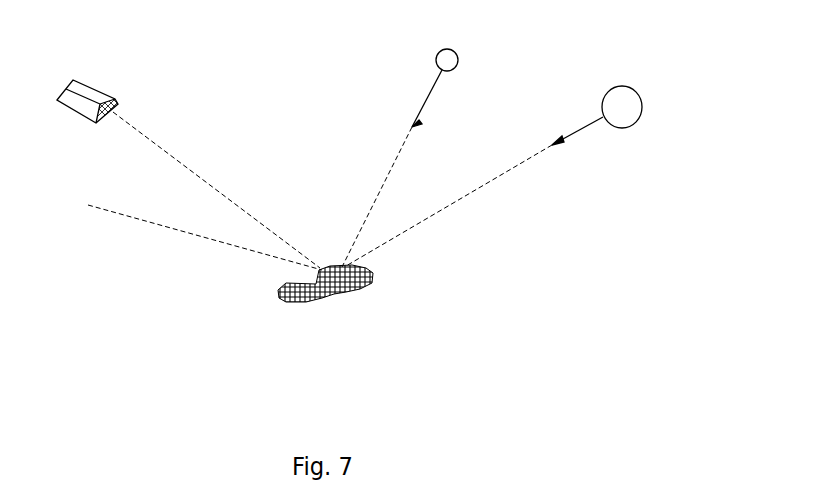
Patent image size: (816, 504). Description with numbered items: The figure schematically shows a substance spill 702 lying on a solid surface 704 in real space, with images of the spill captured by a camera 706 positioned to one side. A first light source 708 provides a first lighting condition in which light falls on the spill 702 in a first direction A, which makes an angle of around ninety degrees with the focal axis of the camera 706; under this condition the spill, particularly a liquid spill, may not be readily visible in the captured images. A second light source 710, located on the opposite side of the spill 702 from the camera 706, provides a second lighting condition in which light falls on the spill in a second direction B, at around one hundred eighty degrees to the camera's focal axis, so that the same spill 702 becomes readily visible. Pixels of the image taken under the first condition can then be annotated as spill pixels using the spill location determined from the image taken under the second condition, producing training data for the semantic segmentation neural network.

The substance spill 702 is at (358, 295).
The solid surface 704 is at (408, 282).
The camera 706 is at (95, 89).
The first light source 708 is at (457, 53).
The second light source 710 is at (641, 100).
The first direction A is at (432, 98).
The second direction B is at (583, 125).